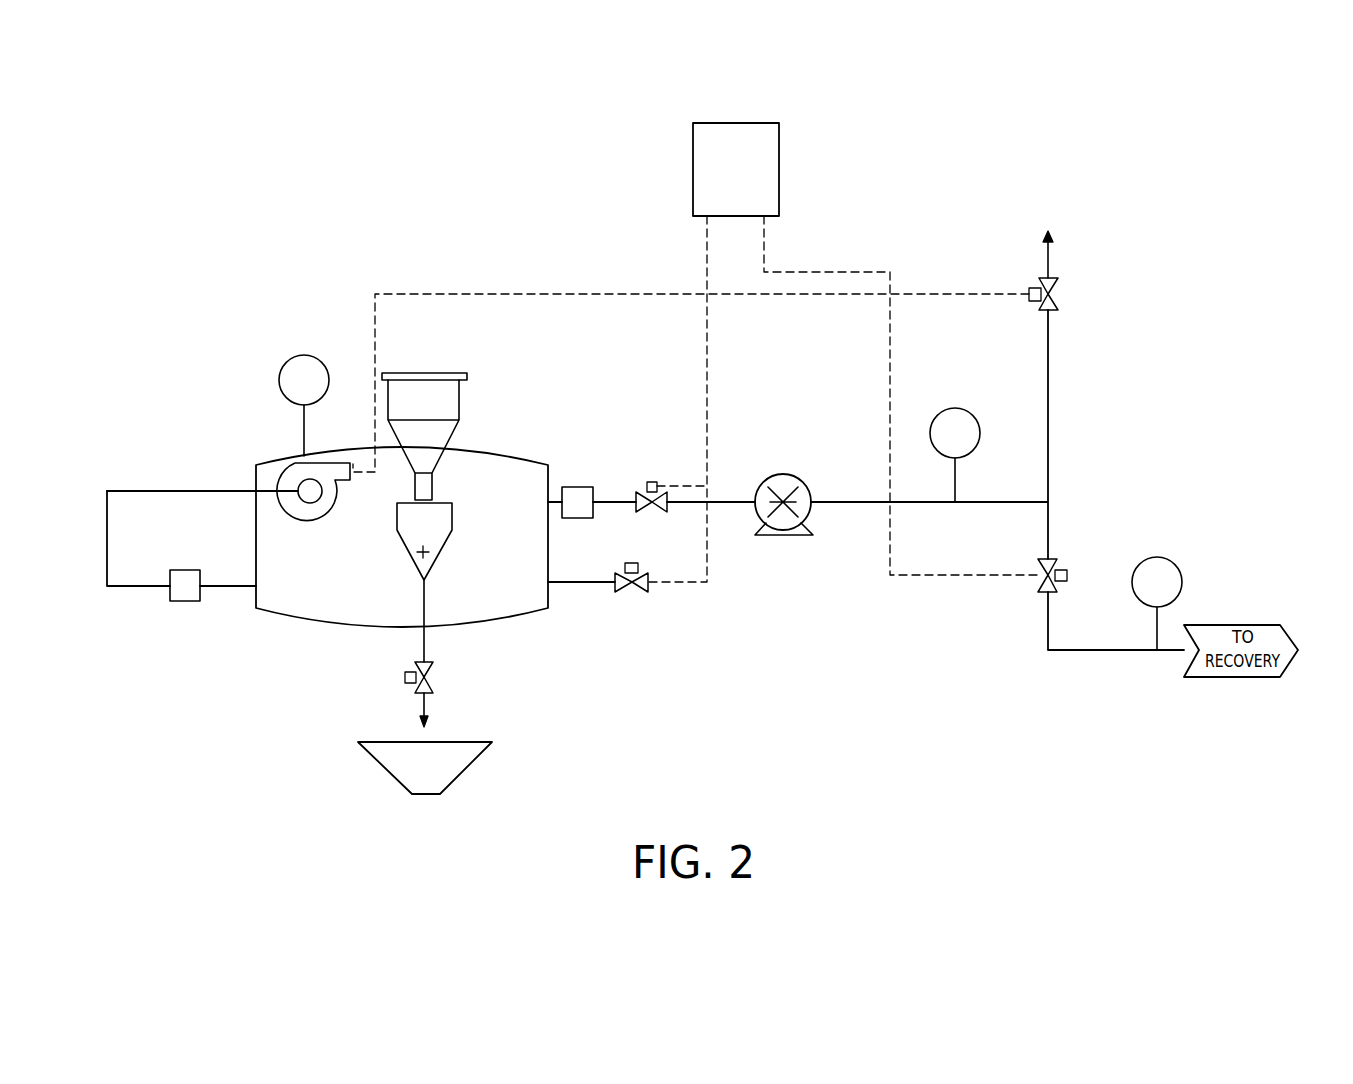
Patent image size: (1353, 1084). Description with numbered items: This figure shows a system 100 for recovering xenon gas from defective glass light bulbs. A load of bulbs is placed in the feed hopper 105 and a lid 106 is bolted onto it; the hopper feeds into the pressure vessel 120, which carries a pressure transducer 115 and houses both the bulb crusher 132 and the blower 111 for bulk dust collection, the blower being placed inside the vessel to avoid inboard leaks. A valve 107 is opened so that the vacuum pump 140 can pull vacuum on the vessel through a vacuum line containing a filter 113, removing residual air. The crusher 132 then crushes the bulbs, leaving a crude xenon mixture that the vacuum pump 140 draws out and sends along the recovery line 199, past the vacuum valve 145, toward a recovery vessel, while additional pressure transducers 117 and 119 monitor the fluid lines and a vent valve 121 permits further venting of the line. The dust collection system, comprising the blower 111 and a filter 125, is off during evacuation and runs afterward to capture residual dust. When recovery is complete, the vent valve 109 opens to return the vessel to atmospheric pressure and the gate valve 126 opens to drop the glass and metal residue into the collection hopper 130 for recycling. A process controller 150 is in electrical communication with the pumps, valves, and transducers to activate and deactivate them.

The system 100 is at (925, 187).
The feed hopper 105 is at (448, 400).
The lid 106 is at (413, 374).
The valve 107 is at (650, 484).
The vent valve 109 is at (637, 591).
The blower 111 is at (315, 510).
The filter 113 is at (577, 518).
The pressure transducer 115 is at (282, 370).
The pressure transducer 117 is at (979, 430).
The pressure transducer 119 is at (1182, 580).
The pressure vessel 120 is at (535, 456).
The vent valve 121 is at (1058, 299).
The filter 125 is at (188, 601).
The gate valve 126 is at (432, 681).
The collection hopper 130 is at (437, 768).
The bulb crusher 132 is at (437, 555).
The vacuum pump 140 is at (797, 495).
The vacuum valve 145 is at (1068, 575).
The process controller 150 is at (695, 352).
The recovery line 199 is at (719, 494).